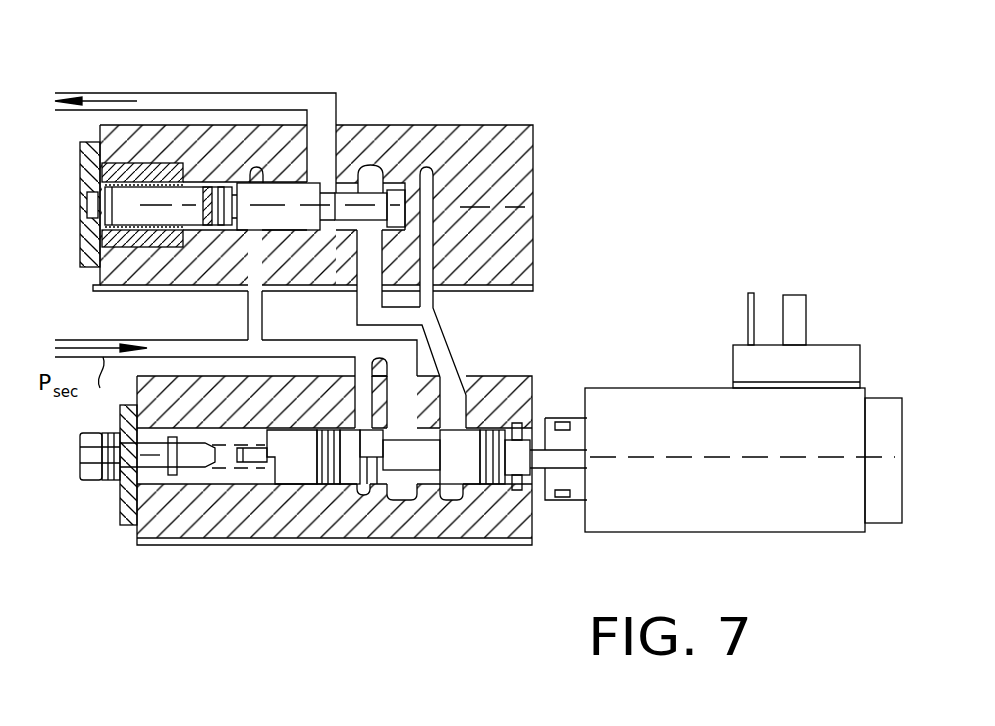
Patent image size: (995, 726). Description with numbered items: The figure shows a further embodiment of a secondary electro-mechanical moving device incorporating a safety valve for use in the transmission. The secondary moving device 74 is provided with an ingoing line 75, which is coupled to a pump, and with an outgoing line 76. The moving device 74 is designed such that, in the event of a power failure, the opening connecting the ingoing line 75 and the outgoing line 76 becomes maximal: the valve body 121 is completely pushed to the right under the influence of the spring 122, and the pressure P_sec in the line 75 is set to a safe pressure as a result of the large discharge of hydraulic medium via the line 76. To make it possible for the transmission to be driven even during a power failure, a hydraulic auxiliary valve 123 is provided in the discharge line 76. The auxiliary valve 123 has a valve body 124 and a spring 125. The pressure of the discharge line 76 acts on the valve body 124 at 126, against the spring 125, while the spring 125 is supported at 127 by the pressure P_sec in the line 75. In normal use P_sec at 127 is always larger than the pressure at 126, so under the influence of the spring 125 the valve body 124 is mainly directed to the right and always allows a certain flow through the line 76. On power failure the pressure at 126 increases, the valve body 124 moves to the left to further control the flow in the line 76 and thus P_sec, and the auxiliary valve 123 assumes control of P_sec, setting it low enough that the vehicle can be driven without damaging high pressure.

The secondary moving device 74 is at (652, 365).
The ingoing line 75 is at (77, 337).
The outgoing line 76 is at (215, 92).
The valve body 121 is at (297, 470).
The spring 122 is at (120, 487).
The hydraulic auxiliary valve 123 is at (470, 143).
The valve body 124 is at (343, 200).
The spring 125 is at (153, 247).
The discharge line pressure location 126 is at (425, 198).
The P_sec support location 127 is at (248, 315).